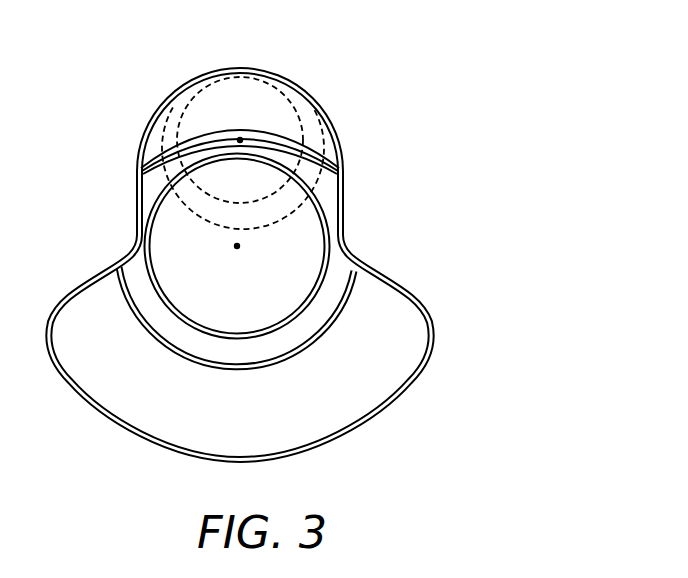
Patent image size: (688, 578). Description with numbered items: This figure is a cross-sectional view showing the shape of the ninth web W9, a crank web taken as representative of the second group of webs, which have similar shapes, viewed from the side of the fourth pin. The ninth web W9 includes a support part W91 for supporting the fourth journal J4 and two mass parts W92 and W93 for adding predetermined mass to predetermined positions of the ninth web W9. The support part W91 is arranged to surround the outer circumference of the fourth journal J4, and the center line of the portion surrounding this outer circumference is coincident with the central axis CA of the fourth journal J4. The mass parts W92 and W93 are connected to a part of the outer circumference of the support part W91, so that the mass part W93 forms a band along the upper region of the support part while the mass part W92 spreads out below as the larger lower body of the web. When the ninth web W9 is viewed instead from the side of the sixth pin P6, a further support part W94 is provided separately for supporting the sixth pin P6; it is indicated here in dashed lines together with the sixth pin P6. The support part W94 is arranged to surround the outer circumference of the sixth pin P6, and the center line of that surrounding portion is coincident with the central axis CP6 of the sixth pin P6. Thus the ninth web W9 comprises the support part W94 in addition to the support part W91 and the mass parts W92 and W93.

The ninth web W9 is at (304, 265).
The support part W91 is at (327, 195).
The mass part W92 is at (403, 333).
The mass part W93 is at (307, 133).
The support part W94 is at (163, 108).
The sixth pin P6 is at (209, 110).
The central axis CP6 is at (240, 138).
The fourth journal J4 is at (298, 239).
The central axis CA is at (237, 246).